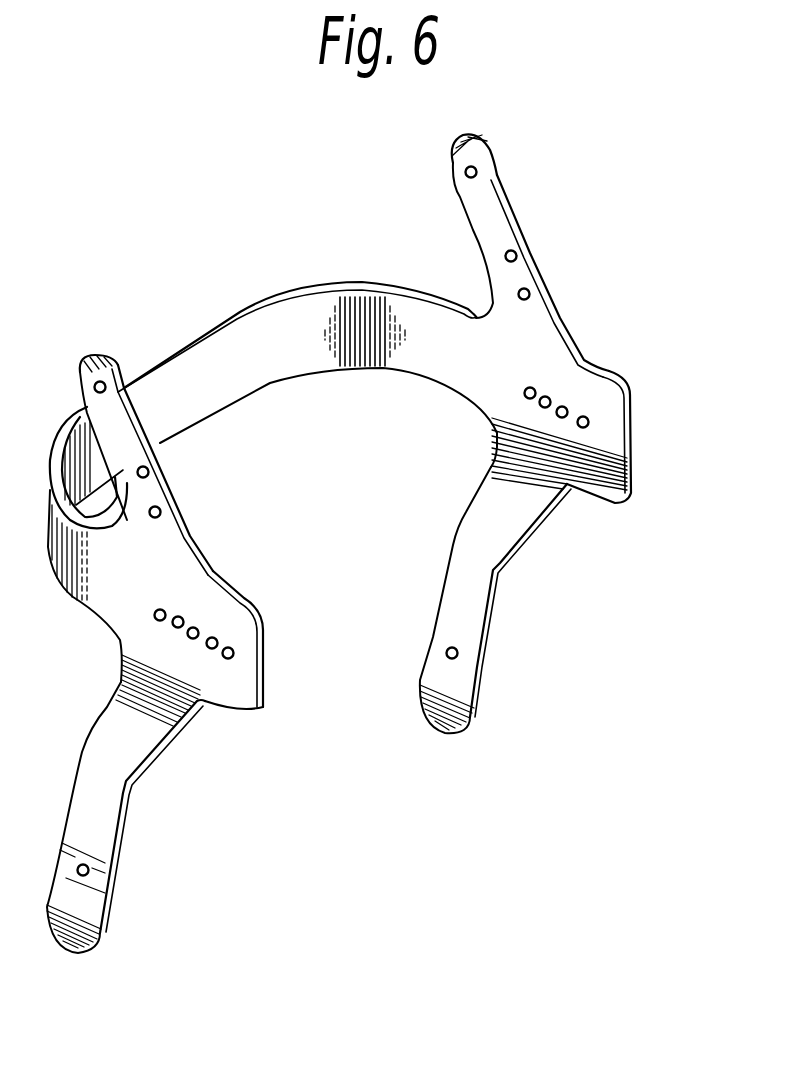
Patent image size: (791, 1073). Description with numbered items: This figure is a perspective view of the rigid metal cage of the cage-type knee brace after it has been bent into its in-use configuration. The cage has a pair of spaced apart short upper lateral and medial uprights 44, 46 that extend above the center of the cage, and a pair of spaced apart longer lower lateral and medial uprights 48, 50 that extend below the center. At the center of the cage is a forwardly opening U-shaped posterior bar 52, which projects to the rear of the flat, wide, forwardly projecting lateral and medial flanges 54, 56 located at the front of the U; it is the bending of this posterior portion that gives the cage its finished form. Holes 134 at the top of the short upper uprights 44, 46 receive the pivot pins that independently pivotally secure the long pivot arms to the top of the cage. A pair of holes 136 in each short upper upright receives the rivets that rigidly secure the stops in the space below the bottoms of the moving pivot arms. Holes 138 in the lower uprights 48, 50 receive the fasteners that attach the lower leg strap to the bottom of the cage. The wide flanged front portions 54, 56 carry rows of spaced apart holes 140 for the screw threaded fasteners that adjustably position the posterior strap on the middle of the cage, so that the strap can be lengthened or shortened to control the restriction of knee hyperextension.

The upper lateral upright 44 is at (111, 362).
The upper medial upright 46 is at (487, 155).
The lower lateral upright 48 is at (100, 833).
The lower medial upright 50 is at (477, 612).
The U-shaped posterior bar 52 is at (268, 371).
The lateral flange 54 is at (243, 680).
The medial flange 56 is at (617, 460).
The holes 134 is at (286, 280).
The holes 136 is at (160, 510).
The holes 138 is at (89, 870).
The holes 140 is at (215, 639).